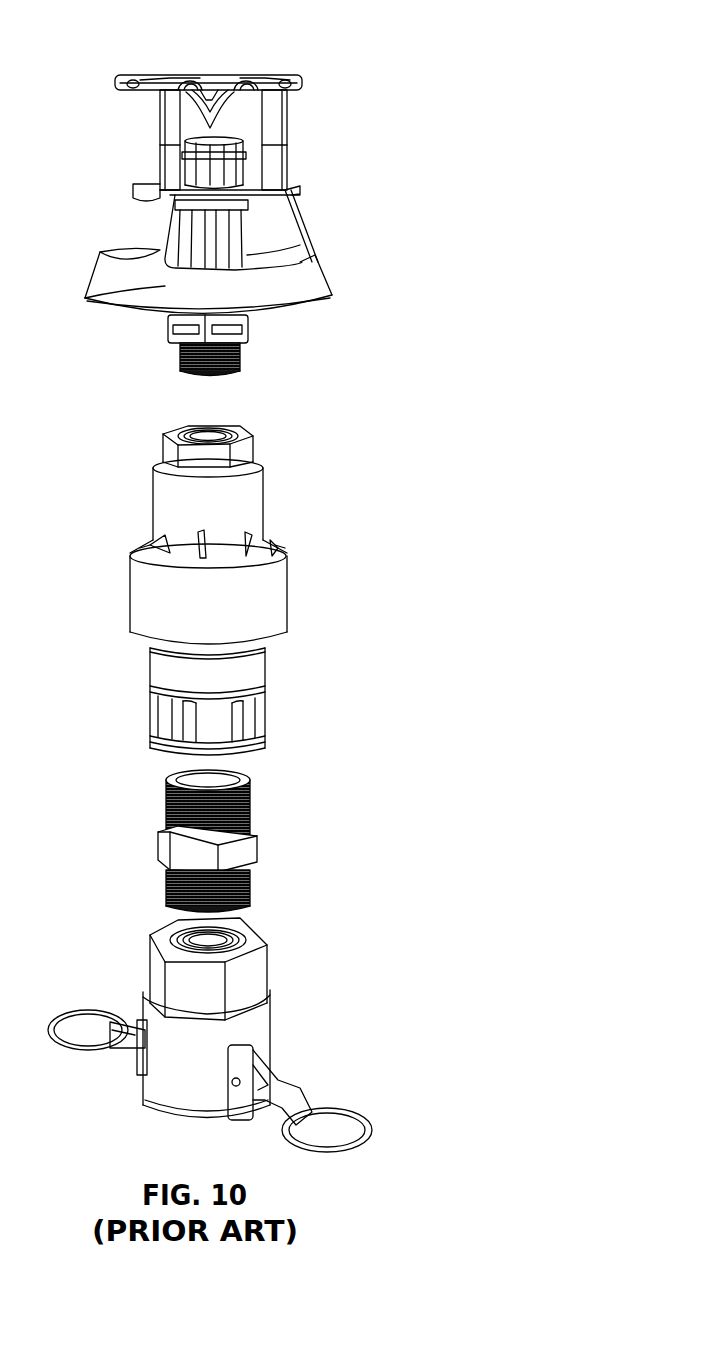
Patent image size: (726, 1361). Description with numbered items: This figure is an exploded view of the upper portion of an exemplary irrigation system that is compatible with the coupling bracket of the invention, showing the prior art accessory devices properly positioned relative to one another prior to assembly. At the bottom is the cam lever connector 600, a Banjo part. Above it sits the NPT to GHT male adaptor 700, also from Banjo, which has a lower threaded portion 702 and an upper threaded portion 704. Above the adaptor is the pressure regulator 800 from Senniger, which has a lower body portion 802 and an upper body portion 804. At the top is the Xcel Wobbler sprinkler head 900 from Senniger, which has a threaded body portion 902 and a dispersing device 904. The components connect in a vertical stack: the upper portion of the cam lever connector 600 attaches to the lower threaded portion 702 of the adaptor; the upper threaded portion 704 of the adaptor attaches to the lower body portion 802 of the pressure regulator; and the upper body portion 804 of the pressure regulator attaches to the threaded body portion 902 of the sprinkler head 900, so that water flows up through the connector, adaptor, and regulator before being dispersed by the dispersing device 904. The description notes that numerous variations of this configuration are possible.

The sprinkler head 900 is at (400, 252).
The dispersing device 904 is at (253, 77).
The threaded body portion 902 is at (242, 362).
The pressure regulator 800 is at (300, 597).
The upper body portion 804 is at (264, 494).
The lower body portion 802 is at (268, 695).
The NPT to GHT male adaptor 700 is at (272, 850).
The upper threaded portion 704 is at (248, 796).
The lower threaded portion 702 is at (250, 877).
The cam lever connector 600 is at (297, 1040).